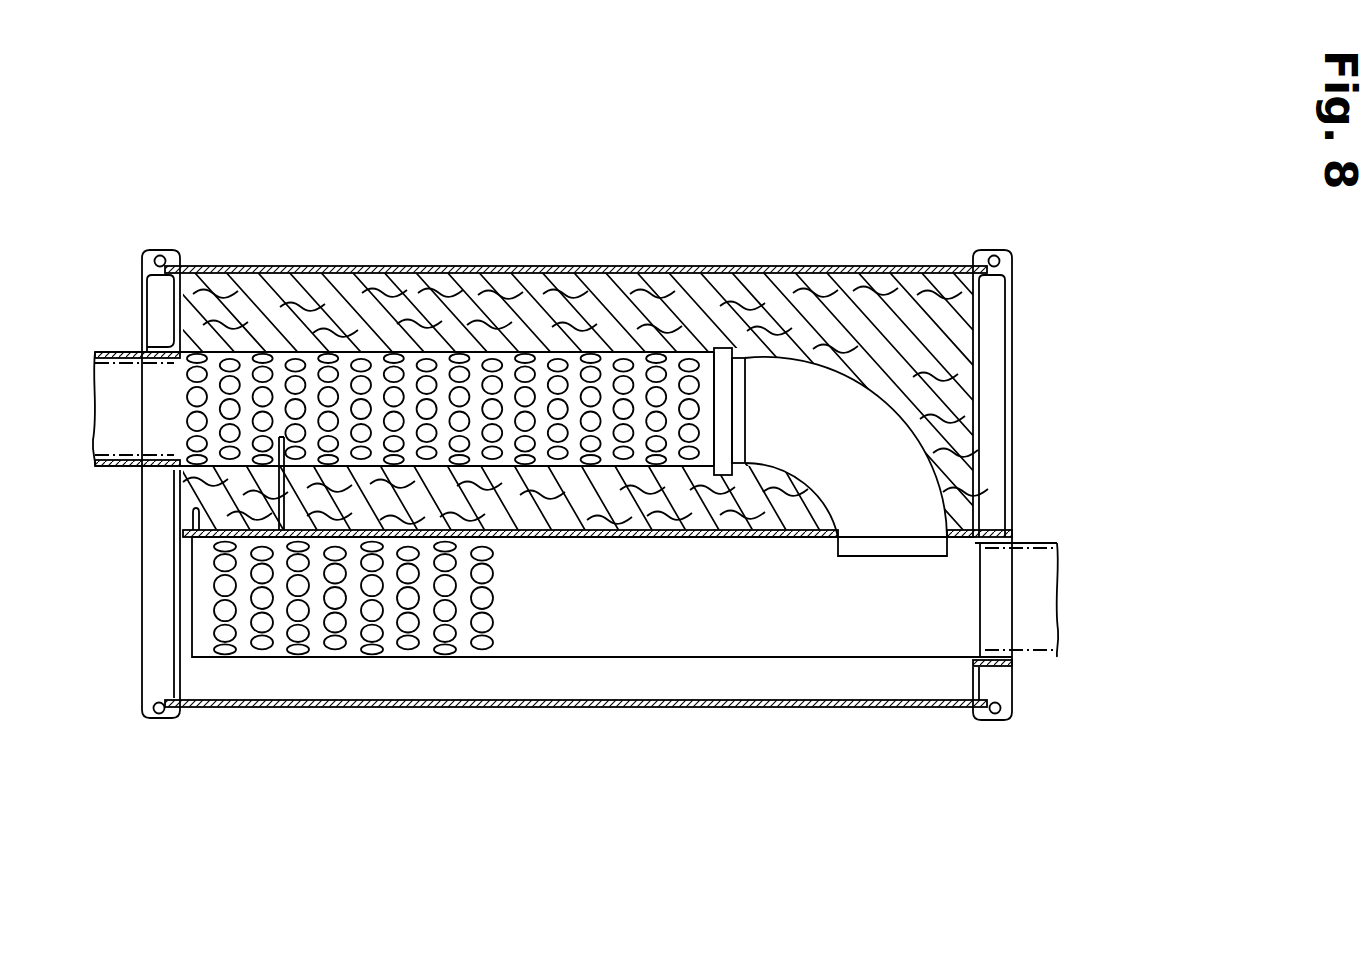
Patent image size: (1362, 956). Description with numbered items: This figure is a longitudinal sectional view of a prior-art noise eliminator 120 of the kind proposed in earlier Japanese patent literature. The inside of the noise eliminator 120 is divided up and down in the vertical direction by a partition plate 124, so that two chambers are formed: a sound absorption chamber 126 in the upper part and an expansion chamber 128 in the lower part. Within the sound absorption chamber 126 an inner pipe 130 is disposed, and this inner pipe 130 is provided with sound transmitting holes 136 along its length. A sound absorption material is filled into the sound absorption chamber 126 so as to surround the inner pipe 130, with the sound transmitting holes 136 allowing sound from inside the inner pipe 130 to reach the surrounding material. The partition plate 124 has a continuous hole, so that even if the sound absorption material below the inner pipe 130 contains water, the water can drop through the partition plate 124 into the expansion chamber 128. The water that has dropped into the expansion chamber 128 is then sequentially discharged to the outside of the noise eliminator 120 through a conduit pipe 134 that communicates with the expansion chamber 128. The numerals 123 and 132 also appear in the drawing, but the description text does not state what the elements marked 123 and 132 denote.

The noise eliminator 120 is at (923, 206).
The partition plate 123 is at (694, 540).
The partition plate 124 is at (657, 540).
The sound absorption chamber 126 is at (613, 303).
The expansion chamber 128 is at (533, 682).
The inner pipe 130 is at (786, 402).
The insulation layer 132 is at (914, 348).
The conduit pipe 134 is at (601, 620).
The sound transmitting holes 136 is at (357, 412).